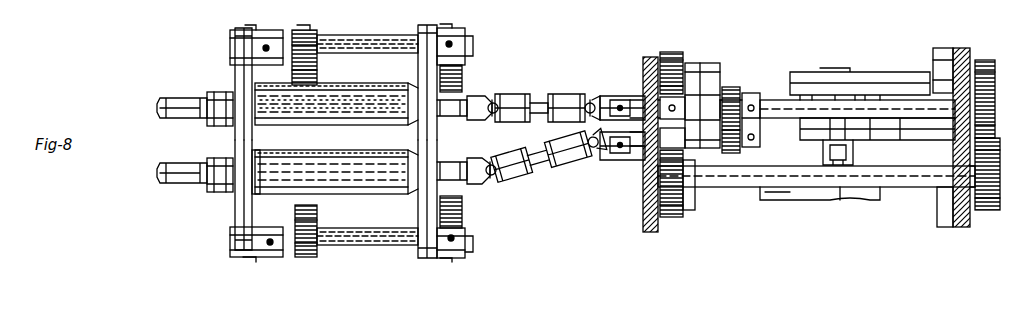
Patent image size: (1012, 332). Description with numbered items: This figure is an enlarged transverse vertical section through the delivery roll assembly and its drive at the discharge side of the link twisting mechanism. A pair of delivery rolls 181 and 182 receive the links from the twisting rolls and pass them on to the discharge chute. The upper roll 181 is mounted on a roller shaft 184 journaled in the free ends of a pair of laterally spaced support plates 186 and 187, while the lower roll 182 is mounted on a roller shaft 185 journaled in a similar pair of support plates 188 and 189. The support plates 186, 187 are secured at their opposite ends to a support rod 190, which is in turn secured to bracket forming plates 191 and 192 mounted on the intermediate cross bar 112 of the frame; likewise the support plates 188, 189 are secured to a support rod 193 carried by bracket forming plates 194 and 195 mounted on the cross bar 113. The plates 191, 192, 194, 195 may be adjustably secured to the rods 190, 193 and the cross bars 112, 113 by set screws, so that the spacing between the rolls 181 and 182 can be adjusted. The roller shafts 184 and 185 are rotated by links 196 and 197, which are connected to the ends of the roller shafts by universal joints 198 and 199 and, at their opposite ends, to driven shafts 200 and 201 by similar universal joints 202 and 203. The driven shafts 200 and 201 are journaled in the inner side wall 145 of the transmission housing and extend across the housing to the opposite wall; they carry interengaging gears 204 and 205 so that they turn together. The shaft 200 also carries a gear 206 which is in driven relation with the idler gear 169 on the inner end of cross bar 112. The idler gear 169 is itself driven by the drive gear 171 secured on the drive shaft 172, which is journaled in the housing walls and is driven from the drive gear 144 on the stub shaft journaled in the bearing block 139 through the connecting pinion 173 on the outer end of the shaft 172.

The support bar 112 is at (174, 100).
The support bar 113 is at (178, 178).
The bearing block 139 is at (802, 78).
The drive gear 144 is at (985, 60).
The side wall 145 is at (650, 234).
The idler gear 169 is at (670, 54).
The drive gear 171 is at (678, 216).
The drive shaft 172 is at (878, 188).
The connecting pinion 173 is at (986, 212).
The delivery roll 181 is at (365, 92).
The delivery roll 182 is at (405, 158).
The roller shaft 184 is at (345, 82).
The roller shaft 185 is at (256, 155).
The support plate 186 is at (235, 72).
The support plate 187 is at (424, 27).
The support plate 188 is at (238, 218).
The support plate 189 is at (418, 213).
The support rod 190 is at (352, 44).
The bracket forming plate 191 is at (318, 36).
The bracket forming plate 192 is at (457, 35).
The support rod 193 is at (342, 243).
The bracket forming plate 194 is at (302, 258).
The bracket forming plate 195 is at (455, 258).
The link 196 is at (541, 96).
The link 197 is at (548, 172).
The universal joint 198 is at (500, 97).
The universal joint 199 is at (492, 168).
The driven shaft 200 is at (910, 92).
The driven shaft 201 is at (888, 140).
The universal joint 202 is at (598, 95).
The universal joint 203 is at (598, 165).
The gear 204 is at (748, 92).
The gear 205 is at (757, 164).
The gear 206 is at (705, 92).